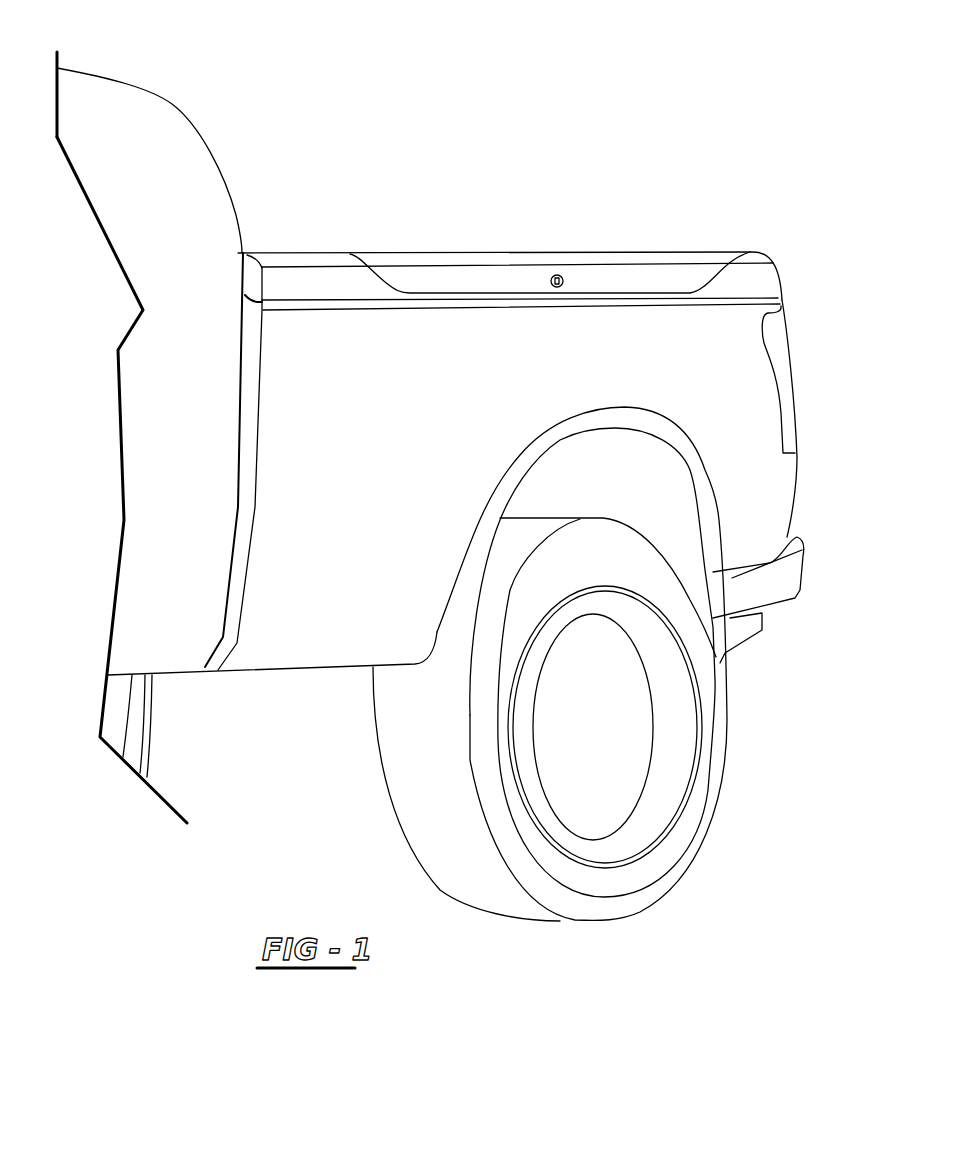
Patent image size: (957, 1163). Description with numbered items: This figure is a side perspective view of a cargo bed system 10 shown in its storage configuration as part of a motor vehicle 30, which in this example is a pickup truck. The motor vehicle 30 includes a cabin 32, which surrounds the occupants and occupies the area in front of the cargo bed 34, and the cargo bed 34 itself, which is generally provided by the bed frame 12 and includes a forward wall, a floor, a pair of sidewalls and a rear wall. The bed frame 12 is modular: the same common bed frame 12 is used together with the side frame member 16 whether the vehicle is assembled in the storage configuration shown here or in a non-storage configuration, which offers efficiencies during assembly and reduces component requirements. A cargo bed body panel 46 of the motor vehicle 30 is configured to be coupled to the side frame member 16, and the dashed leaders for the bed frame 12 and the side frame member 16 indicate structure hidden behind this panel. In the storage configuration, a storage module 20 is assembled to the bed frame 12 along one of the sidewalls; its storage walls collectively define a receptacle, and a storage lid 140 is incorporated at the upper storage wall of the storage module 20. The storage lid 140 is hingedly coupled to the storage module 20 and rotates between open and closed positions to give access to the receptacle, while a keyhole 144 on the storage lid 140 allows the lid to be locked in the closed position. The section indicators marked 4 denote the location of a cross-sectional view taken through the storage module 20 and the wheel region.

The cargo bed system 10 is at (613, 70).
The bed frame 12 is at (352, 582).
The side frame member 16 is at (690, 352).
The storage module 20 is at (676, 246).
The motor vehicle 30 is at (147, 140).
The cabin 32 is at (180, 210).
The cargo bed 34 is at (330, 222).
The cargo bed body panel 46 is at (423, 340).
The storage lid 140 is at (412, 277).
The keyhole 144 is at (557, 288).
The section line 4- 4 is at (577, 240).